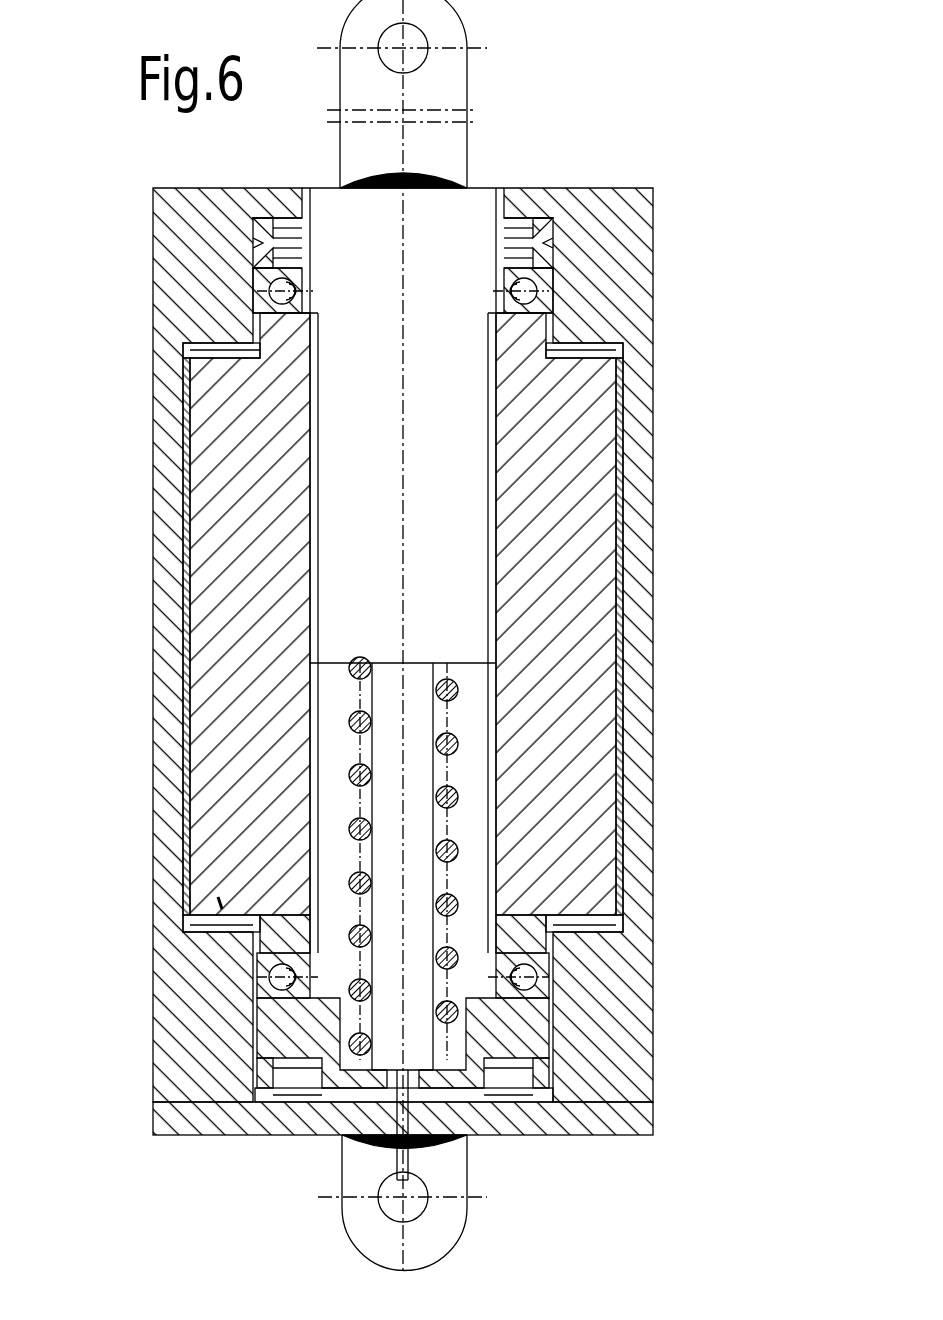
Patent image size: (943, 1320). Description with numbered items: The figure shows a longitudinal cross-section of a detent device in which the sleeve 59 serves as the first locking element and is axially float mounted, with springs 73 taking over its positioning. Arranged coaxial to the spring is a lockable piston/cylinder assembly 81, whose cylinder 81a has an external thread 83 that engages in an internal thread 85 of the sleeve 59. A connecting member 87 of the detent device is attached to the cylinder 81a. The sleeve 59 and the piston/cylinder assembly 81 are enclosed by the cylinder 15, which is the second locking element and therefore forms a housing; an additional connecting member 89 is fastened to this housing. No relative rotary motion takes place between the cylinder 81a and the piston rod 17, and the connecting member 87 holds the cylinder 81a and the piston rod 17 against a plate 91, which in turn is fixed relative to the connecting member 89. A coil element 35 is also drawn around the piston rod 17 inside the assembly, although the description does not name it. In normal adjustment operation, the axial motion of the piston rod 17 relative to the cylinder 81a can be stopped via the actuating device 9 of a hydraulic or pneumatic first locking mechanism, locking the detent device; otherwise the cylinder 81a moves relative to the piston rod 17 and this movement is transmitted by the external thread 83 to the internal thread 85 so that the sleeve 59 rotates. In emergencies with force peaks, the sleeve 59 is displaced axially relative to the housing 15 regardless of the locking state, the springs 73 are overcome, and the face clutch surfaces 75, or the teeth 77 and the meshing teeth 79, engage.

The actuating device 9 is at (410, 1157).
The cylinder 15 is at (627, 957).
The piston rod 17 is at (415, 825).
The coil spring 35 is at (450, 740).
The sleeve 59 is at (587, 567).
The springs 73 is at (553, 1100).
The face clutch surfaces 75 is at (588, 372).
The teeth 77 is at (250, 912).
The meshing teeth 79 is at (233, 928).
The piston/cylinder assembly 81 is at (470, 766).
The cylinder 81a is at (360, 497).
The external thread 83 is at (306, 600).
The internal thread 85 is at (300, 740).
The connecting member 87 is at (447, 143).
The connecting member 89 is at (443, 1217).
The plate 91 is at (545, 1019).